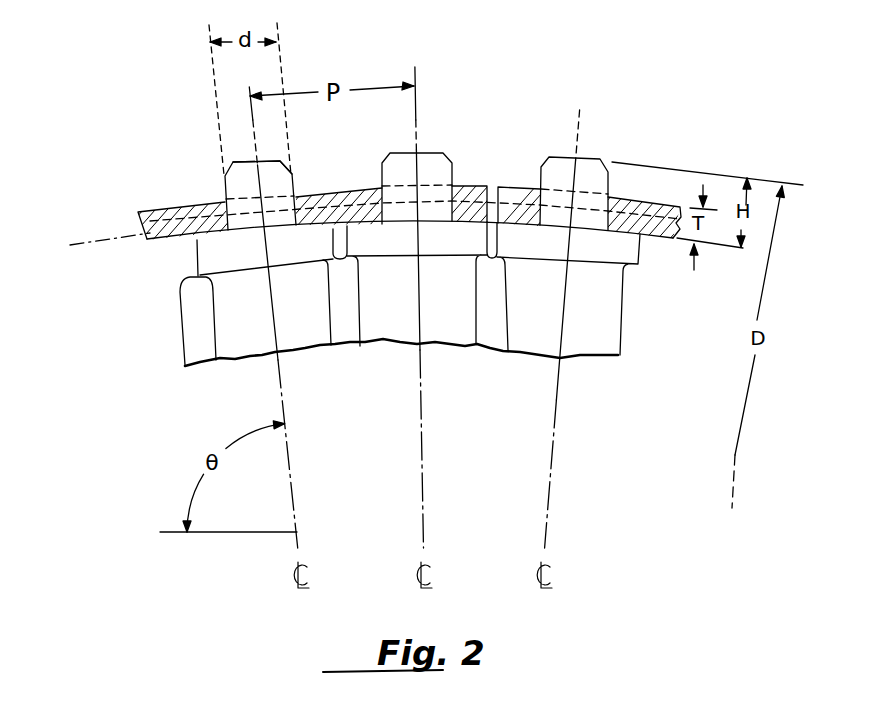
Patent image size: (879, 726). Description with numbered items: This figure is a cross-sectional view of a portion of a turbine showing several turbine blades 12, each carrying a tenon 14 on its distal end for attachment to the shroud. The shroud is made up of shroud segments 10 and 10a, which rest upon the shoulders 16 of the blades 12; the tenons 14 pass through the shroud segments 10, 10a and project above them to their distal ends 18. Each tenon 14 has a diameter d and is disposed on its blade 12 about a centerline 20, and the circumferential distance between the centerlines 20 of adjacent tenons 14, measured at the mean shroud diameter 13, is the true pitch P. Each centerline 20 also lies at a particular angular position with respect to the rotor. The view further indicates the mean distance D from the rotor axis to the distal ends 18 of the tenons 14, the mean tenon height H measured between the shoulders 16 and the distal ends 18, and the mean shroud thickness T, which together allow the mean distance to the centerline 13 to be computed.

The shroud segment 10 is at (165, 218).
The shroud segment 10a is at (512, 189).
The blade 12 is at (242, 343).
The mean shroud diameter 13 is at (110, 243).
The tenon 14 is at (229, 188).
The shoulder 16 is at (196, 258).
The distal end 18 is at (273, 157).
The centerline 20 is at (288, 441).